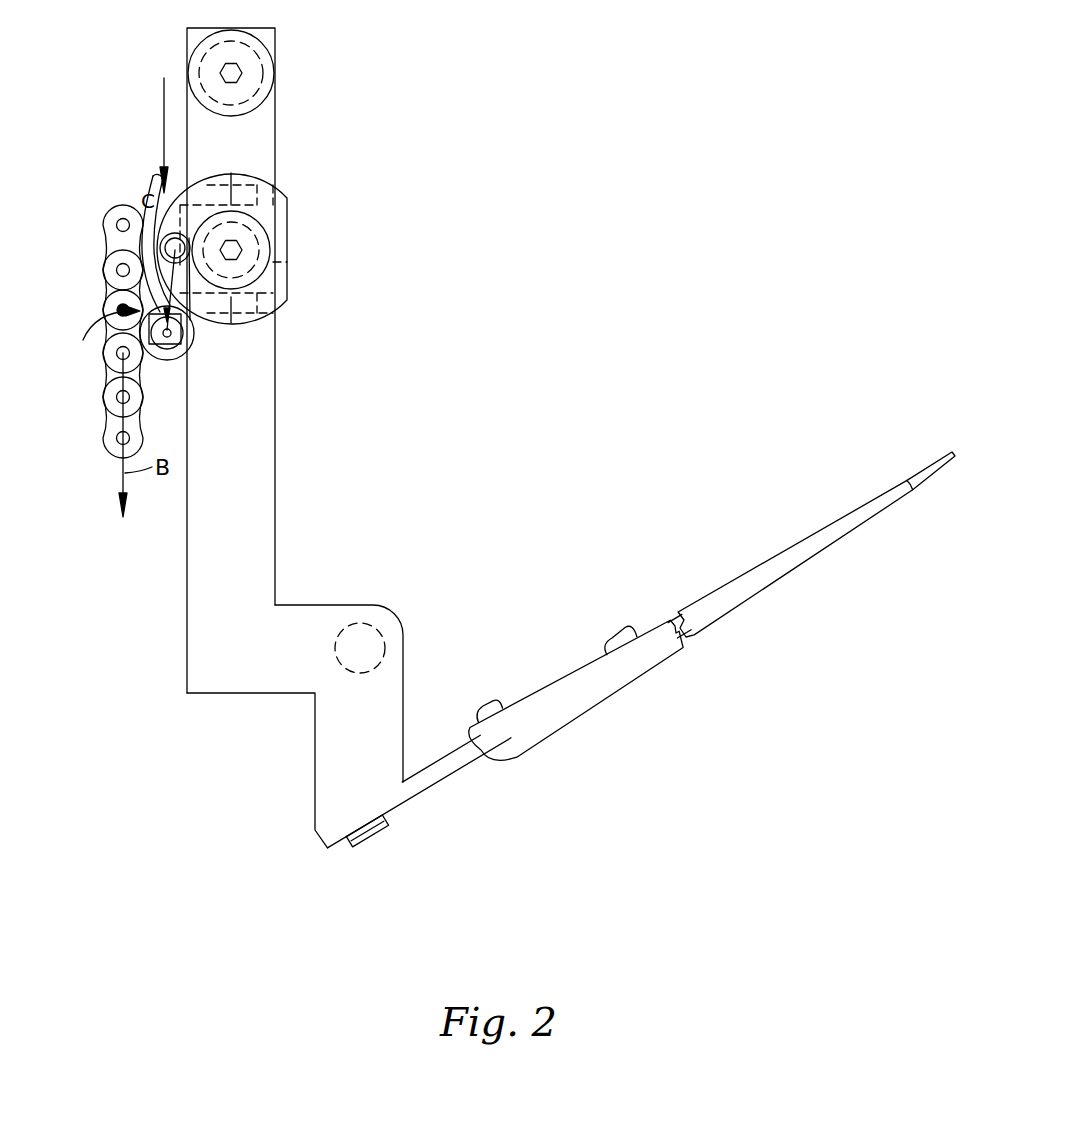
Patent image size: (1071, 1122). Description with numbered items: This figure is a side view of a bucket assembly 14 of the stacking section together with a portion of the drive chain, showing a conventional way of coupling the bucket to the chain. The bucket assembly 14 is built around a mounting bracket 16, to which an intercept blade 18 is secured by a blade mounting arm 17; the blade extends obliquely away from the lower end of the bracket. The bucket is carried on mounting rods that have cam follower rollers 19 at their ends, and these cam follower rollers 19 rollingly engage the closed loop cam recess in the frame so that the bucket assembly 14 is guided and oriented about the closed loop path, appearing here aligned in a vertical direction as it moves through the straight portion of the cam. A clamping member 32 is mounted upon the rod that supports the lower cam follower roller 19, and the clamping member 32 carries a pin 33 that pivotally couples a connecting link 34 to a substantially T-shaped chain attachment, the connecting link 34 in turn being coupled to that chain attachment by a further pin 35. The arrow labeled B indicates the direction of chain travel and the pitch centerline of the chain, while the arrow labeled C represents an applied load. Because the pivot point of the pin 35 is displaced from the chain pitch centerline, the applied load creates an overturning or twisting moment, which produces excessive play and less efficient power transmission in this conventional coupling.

The bucket assembly 14 is at (513, 633).
The mounting bracket 16 is at (327, 762).
The blade mounting arm 17 is at (450, 772).
The intercept blade 18 is at (652, 626).
The cam follower roller 19 is at (275, 68).
The clamping member 32 is at (287, 236).
The pin 33 is at (163, 197).
The connecting link 34 is at (150, 267).
The pin 35 is at (173, 348).